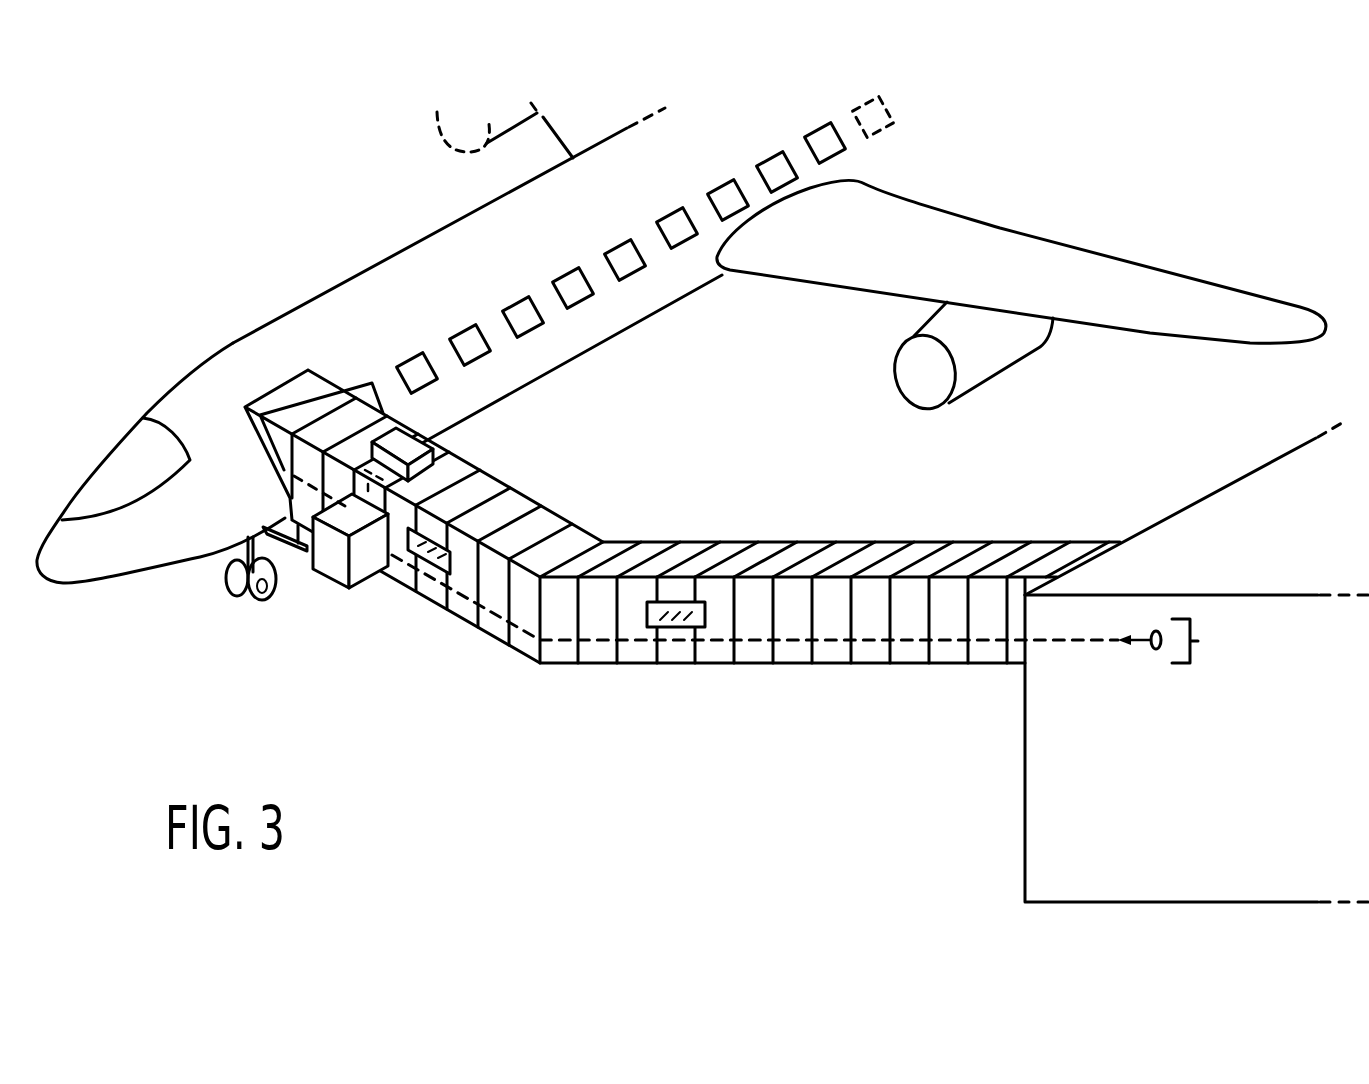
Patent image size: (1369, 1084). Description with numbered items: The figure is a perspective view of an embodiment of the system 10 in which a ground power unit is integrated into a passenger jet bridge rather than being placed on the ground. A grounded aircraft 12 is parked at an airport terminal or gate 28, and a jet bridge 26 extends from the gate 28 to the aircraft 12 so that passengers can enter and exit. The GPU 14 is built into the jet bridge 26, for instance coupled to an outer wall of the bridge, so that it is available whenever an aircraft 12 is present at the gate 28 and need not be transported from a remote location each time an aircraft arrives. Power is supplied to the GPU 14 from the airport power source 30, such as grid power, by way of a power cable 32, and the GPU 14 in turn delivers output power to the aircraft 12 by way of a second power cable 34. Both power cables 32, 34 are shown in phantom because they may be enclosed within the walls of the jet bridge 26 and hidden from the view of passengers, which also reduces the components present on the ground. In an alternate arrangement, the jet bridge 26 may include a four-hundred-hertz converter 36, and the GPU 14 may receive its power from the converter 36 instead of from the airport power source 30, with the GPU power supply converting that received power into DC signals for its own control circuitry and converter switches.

The system 10 is at (692, 348).
The aircraft 12 is at (230, 342).
The GPU 14 is at (328, 572).
The jet bridge 26 is at (587, 537).
The airport terminal or gate 28 is at (1026, 748).
The airport power source 30 is at (1164, 682).
The power cable 32 is at (633, 642).
The power cable 34 is at (290, 500).
The 400 hertz converter 36 is at (425, 455).